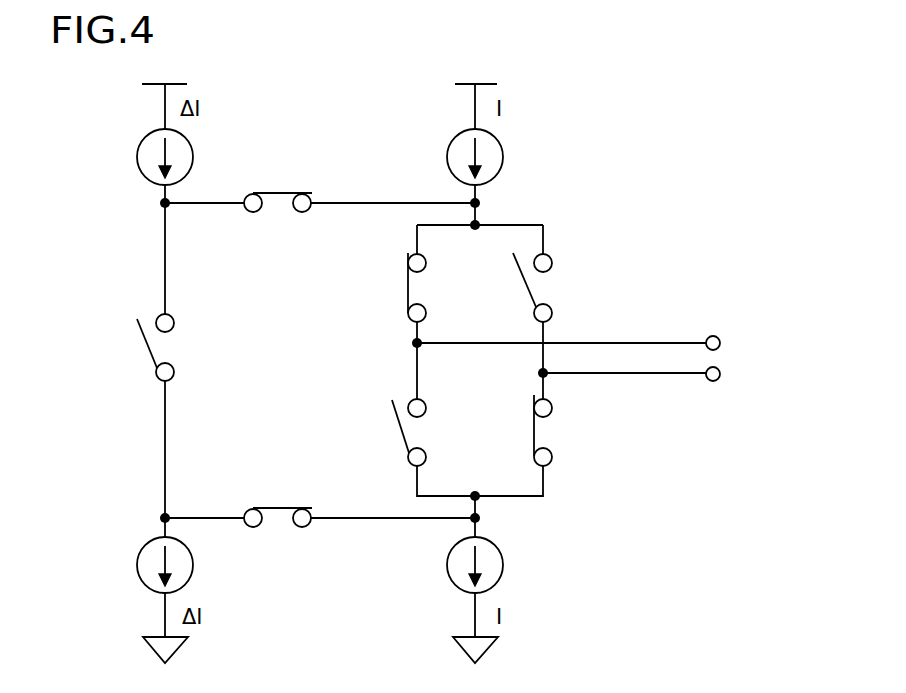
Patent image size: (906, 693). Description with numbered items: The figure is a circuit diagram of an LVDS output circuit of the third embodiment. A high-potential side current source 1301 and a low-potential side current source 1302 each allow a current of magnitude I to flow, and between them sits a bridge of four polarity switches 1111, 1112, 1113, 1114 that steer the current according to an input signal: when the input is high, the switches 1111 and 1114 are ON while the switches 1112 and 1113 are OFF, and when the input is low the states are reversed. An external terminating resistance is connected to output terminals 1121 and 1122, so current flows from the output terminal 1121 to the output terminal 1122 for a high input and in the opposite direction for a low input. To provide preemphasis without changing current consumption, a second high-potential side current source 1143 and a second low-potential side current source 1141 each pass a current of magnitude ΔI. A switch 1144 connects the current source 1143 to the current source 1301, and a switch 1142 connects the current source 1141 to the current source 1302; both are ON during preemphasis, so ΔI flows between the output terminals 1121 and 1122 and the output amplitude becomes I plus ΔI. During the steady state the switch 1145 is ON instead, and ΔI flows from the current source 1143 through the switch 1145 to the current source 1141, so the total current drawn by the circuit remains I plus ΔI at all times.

The current source 1143 is at (137, 157).
The current source 1301 is at (503, 157).
The current source 1141 is at (137, 564).
The current source 1302 is at (503, 565).
The switch 1144 is at (311, 198).
The switch 1142 is at (302, 528).
The switch 1145 is at (156, 378).
The switch 1111 is at (426, 263).
The switch 1112 is at (552, 263).
The switch 1113 is at (426, 408).
The switch 1114 is at (552, 408).
The output terminal 1121 is at (720, 343).
The output terminal 1122 is at (720, 376).